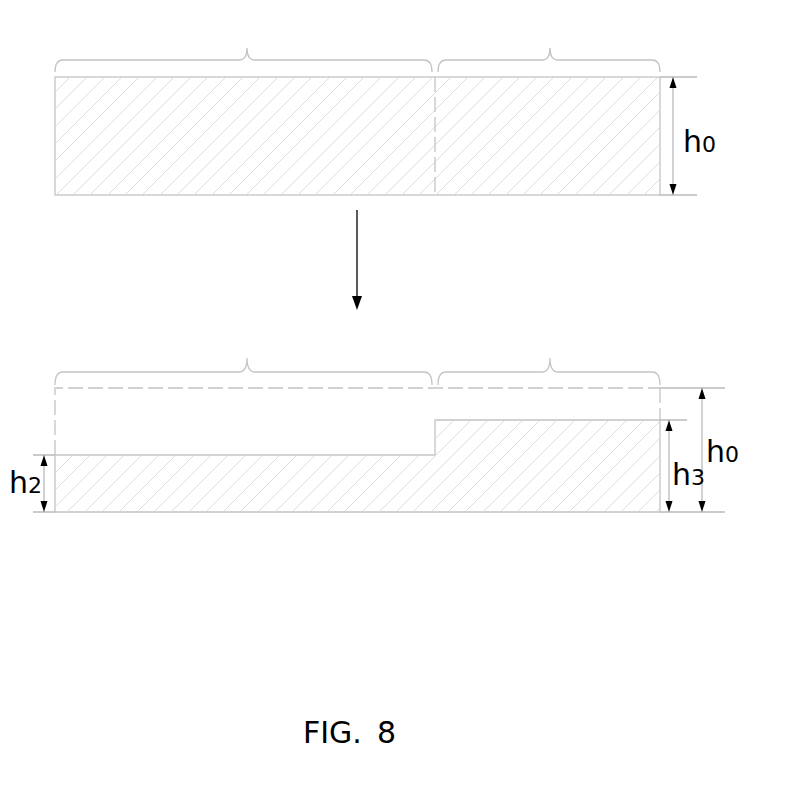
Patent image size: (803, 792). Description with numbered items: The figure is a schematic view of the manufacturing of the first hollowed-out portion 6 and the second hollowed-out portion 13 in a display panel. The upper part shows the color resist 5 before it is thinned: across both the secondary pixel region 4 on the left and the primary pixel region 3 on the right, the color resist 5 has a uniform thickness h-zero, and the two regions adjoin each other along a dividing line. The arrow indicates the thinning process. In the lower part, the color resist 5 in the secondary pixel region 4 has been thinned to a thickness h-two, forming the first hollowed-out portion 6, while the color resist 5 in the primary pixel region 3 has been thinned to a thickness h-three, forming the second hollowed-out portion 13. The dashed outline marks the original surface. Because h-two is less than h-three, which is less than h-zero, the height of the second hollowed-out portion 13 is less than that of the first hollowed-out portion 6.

The primary pixel region 3 is at (549, 197).
The secondary pixel region 4 is at (245, 197).
The color resist 5 is at (618, 152).
The first hollowed-out portion 6 is at (246, 423).
The second hollowed-out portion 13 is at (558, 398).